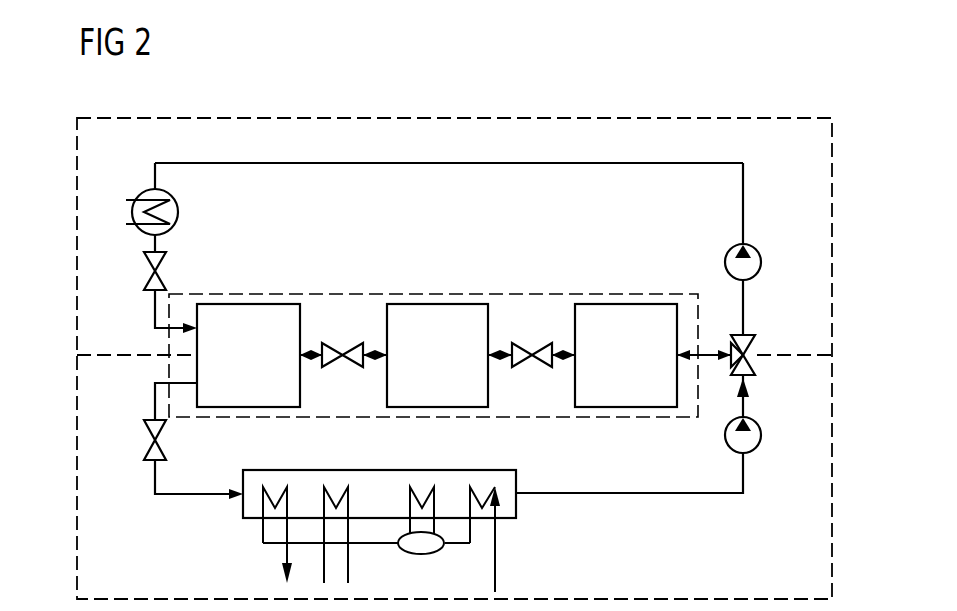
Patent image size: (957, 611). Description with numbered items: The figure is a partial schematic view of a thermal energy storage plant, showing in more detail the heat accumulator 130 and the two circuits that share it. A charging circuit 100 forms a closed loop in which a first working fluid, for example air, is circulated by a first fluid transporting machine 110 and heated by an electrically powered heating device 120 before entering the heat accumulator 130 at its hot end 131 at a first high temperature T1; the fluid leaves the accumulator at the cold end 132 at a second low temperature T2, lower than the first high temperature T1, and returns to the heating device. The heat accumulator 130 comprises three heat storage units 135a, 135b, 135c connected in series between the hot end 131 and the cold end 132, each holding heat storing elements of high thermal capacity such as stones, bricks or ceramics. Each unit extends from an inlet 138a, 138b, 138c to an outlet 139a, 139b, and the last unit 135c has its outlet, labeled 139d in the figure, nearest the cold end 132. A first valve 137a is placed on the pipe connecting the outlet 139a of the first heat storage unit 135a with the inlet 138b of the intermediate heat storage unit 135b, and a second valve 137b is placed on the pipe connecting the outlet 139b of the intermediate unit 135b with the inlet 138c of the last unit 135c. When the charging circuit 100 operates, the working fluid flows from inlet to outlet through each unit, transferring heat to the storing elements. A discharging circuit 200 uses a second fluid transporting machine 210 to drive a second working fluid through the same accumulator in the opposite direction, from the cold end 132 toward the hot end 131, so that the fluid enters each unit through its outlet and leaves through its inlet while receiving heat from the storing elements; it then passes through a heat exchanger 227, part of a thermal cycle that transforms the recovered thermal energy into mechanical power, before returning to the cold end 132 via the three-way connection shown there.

The charging circuit 100 is at (745, 211).
The first fluid transporting machine 110 is at (731, 248).
The heating device 120 is at (178, 213).
The heat accumulator 130 is at (352, 294).
The hot end 131 is at (168, 355).
The cold end 132 is at (732, 352).
The first heat storage unit 135a is at (248, 304).
The intermediate heat storage unit 135b is at (437, 304).
The last heat storage unit 135c is at (625, 304).
The first valve 137a is at (355, 343).
The second valve 137b is at (545, 343).
The inlet of first heat storage unit 138a is at (197, 322).
The inlet of intermediate heat storage unit 138b is at (386, 352).
The inlet of last heat storage unit 138c is at (575, 352).
The outlet of first heat storage unit 139a is at (304, 352).
The outlet of intermediate heat storage unit 139b is at (492, 352).
The outlet of third reactor unit 139d is at (681, 352).
The discharging circuit 200 is at (745, 479).
The second fluid transporting machine 210 is at (725, 433).
The heat exchanger 227 is at (516, 503).
The first high temperature T1 is at (153, 307).
The second low temperature T2 is at (745, 180).